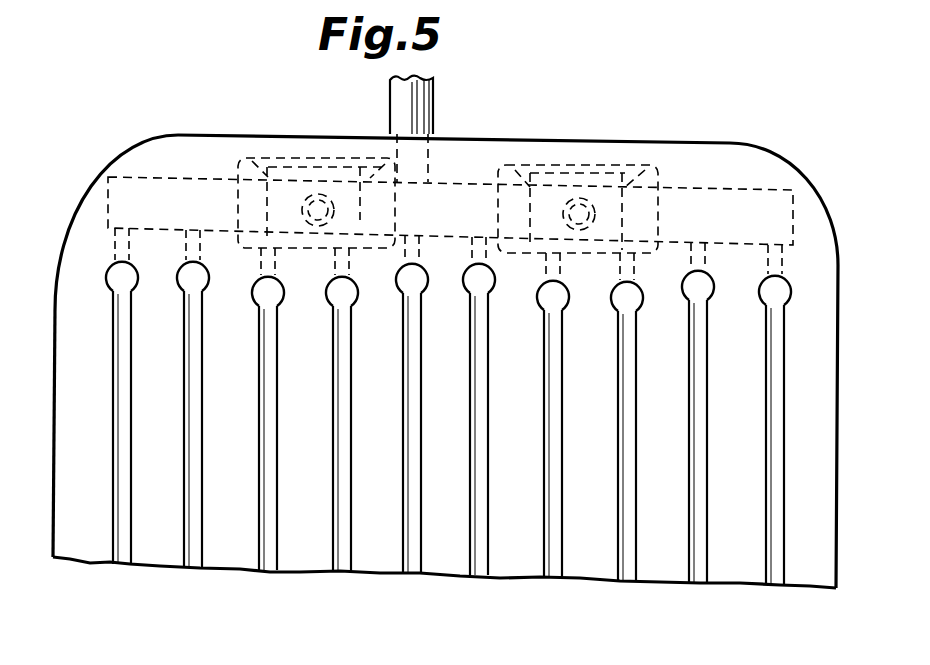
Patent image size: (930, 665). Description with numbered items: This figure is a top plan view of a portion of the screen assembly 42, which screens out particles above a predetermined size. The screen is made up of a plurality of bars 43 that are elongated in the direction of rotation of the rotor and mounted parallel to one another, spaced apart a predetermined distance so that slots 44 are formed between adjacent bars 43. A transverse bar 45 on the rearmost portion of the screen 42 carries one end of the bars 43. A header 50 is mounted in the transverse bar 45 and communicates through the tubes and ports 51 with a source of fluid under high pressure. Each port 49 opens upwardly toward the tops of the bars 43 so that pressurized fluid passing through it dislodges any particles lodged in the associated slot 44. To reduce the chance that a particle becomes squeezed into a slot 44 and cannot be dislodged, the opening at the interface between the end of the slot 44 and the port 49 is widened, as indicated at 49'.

The screen assembly 42 is at (252, 612).
The bars 43 is at (165, 560).
The slots 44 is at (117, 427).
The transverse bar 45 is at (176, 142).
The port 49 is at (442, 281).
The widened opening 49' is at (422, 282).
The header 50 is at (223, 182).
The tubes and ports 51 is at (433, 115).